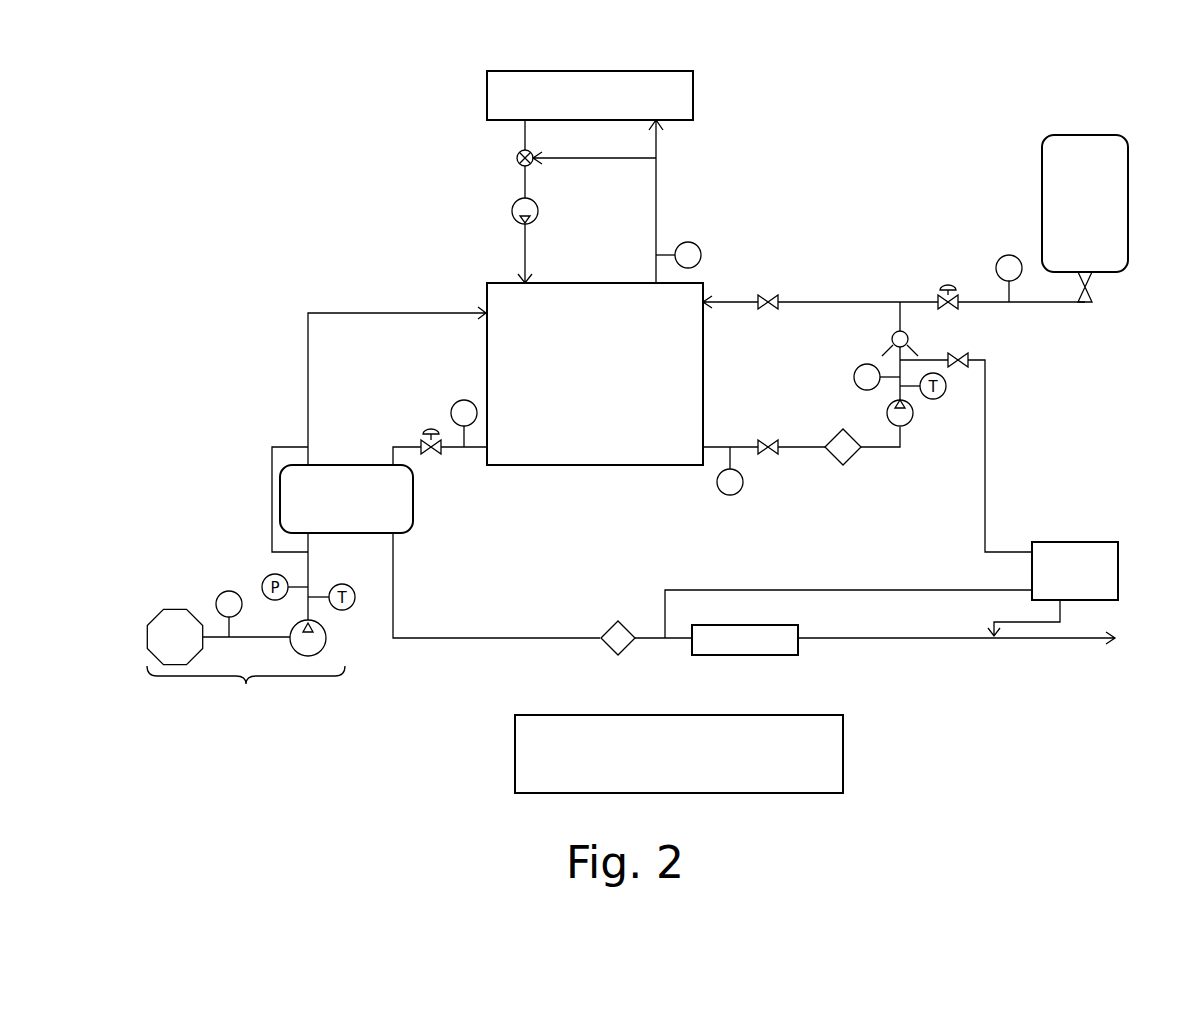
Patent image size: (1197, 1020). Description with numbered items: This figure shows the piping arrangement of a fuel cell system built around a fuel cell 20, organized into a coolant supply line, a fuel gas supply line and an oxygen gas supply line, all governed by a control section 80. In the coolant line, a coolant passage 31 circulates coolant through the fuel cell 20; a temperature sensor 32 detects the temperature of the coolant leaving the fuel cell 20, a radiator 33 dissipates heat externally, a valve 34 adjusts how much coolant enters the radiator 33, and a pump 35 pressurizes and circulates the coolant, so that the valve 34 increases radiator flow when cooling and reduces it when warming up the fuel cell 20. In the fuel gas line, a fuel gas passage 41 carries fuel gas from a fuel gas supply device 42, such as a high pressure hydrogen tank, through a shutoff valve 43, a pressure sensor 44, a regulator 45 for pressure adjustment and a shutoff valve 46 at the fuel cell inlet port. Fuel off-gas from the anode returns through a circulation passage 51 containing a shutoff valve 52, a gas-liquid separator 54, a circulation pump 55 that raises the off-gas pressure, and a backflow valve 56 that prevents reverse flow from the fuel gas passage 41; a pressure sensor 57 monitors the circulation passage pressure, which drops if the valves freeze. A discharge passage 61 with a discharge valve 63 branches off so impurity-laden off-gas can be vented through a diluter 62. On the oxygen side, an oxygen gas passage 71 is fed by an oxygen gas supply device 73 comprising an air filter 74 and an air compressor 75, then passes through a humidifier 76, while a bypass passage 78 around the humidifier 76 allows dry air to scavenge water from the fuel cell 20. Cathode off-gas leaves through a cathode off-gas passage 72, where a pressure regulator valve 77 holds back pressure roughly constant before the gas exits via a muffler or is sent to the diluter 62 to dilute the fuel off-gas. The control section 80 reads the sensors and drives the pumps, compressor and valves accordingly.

The fuel cell 20 is at (607, 283).
The coolant passage 31 is at (656, 190).
The temperature sensor 32 is at (689, 242).
The radiator 33 is at (658, 70).
The valve 34 is at (517, 158).
The pump 35 is at (512, 211).
The fuel gas passage 41 is at (843, 300).
The fuel gas supply device 42 is at (1072, 135).
The shutoff valve 43 is at (1094, 288).
The pressure sensor 44 is at (993, 258).
The regulator 45 is at (940, 284).
The shutoff valve 46 is at (769, 295).
The circulation passage 51 is at (807, 450).
The shutoff valve 52 is at (758, 440).
The gas-liquid separator 54 is at (831, 438).
The circulation pump 55 is at (913, 423).
The backflow valve 56 is at (892, 340).
The pressure sensor 57 is at (855, 370).
The discharge passage 61 is at (985, 436).
The diluter 62 is at (1074, 542).
The discharge valve 63 is at (970, 352).
The oxygen gas passage 71 is at (417, 313).
The cathode off-gas passage 72 is at (482, 638).
The oxygen gas supply device 73 is at (246, 694).
The air filter 74 is at (173, 608).
The air compressor 75 is at (326, 640).
The humidifier 76 is at (351, 465).
The pressure regulator valve 77 is at (416, 428).
The bypass passage 78 is at (272, 472).
The control section 80 is at (519, 715).